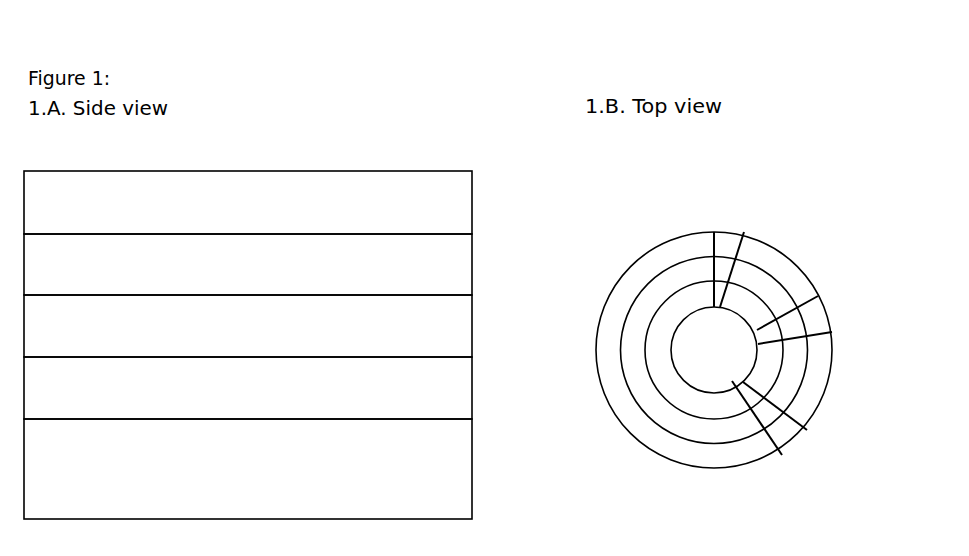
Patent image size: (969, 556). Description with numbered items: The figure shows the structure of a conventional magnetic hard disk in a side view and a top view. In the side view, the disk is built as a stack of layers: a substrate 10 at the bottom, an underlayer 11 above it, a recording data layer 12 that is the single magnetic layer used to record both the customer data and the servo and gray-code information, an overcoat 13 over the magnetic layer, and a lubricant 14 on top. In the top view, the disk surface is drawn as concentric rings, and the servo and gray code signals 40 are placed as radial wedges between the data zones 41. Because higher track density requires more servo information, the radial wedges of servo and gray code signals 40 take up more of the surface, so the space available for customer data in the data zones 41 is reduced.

In FIG. 1A, the substrate 10 is at (248, 469).
In FIG. 1A, the underlayer 11 is at (248, 388).
In FIG. 1A, the recording data layer 12 is at (248, 326).
In FIG. 1A, the overcoat 13 is at (248, 264).
In FIG. 1A, the lubricant 14 is at (248, 202).
In FIG. 1B, the servo and gray code signals 40 is at (828, 301).
In FIG. 1B, the data zones 41 is at (633, 260).